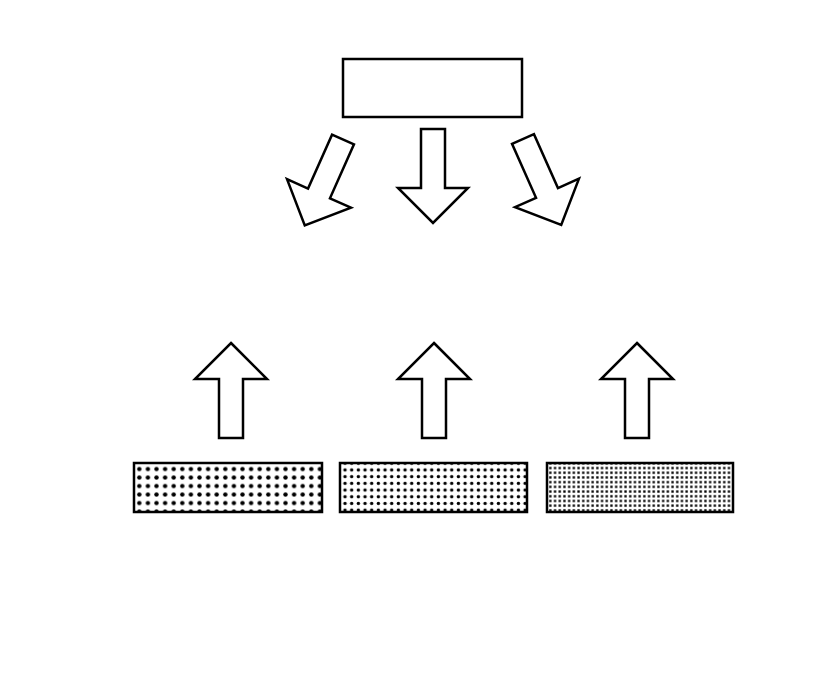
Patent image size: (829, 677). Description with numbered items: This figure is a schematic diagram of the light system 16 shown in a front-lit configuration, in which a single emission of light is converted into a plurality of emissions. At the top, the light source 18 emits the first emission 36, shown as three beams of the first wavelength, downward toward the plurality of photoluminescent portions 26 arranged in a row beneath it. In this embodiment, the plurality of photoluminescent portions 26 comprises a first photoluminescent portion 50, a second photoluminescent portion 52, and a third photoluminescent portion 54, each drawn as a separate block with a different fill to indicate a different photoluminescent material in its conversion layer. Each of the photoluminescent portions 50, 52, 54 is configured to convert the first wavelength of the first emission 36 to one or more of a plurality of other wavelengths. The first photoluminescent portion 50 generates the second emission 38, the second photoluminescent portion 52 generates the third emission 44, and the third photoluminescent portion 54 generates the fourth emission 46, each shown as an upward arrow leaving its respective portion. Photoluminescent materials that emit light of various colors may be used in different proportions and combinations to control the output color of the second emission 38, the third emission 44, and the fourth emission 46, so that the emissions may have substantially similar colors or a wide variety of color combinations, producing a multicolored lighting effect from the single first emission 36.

The light system 16 is at (102, 80).
The light source 18 is at (421, 97).
The first emission 36 is at (347, 165).
The second emission 38 is at (217, 363).
The third emission 44 is at (422, 363).
The fourth emission 46 is at (622, 363).
The first photoluminescent portion 50 is at (159, 467).
The second photoluminescent portion 52 is at (398, 467).
The third photoluminescent portion 54 is at (596, 467).
The plurality of photoluminescent portions 26 is at (410, 504).